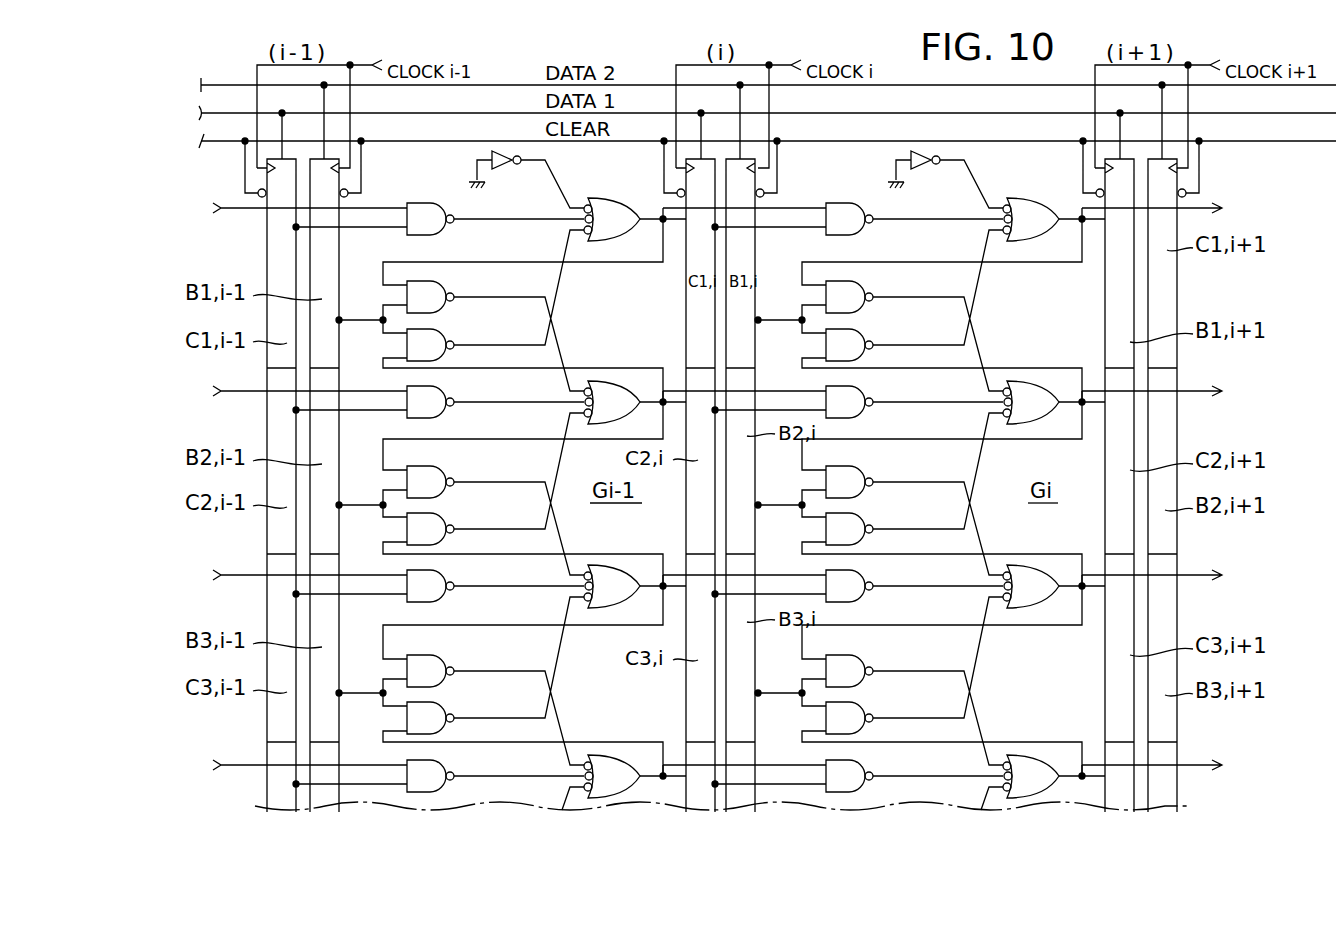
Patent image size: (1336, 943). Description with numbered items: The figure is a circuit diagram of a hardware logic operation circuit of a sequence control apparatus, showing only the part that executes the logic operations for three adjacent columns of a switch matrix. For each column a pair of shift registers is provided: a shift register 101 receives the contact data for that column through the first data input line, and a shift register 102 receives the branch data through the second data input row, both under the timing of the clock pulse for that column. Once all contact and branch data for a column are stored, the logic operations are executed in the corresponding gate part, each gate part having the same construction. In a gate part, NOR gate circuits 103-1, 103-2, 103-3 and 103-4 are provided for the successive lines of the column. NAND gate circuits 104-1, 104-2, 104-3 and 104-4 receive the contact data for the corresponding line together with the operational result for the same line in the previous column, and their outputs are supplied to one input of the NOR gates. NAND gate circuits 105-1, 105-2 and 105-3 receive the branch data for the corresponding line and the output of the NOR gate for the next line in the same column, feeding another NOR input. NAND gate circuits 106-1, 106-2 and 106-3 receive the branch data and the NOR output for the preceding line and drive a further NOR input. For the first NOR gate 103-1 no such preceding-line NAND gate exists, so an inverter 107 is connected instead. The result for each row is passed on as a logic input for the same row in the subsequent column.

The shift register 101 is at (267, 275).
The shift register 102 is at (340, 268).
The NOR gate circuit 103-1 is at (602, 191).
The NOR gate circuit 103-2 is at (606, 381).
The NOR gate circuit 103-3 is at (606, 565).
The NOR gate circuit 103-4 is at (606, 755).
The NAND gate circuit 104-1 is at (418, 202).
The NAND gate circuit 104-2 is at (450, 407).
The NAND gate circuit 104-3 is at (450, 591).
The NAND gate circuit 104-4 is at (450, 781).
The NAND gate circuit 105-1 is at (445, 336).
The NAND gate circuit 105-2 is at (445, 521).
The NAND gate circuit 105-3 is at (445, 709).
The NAND gate circuit 106-1 is at (445, 292).
The NAND gate circuit 106-2 is at (445, 476).
The NAND gate circuit 106-3 is at (445, 664).
The inverter 107 is at (508, 168).